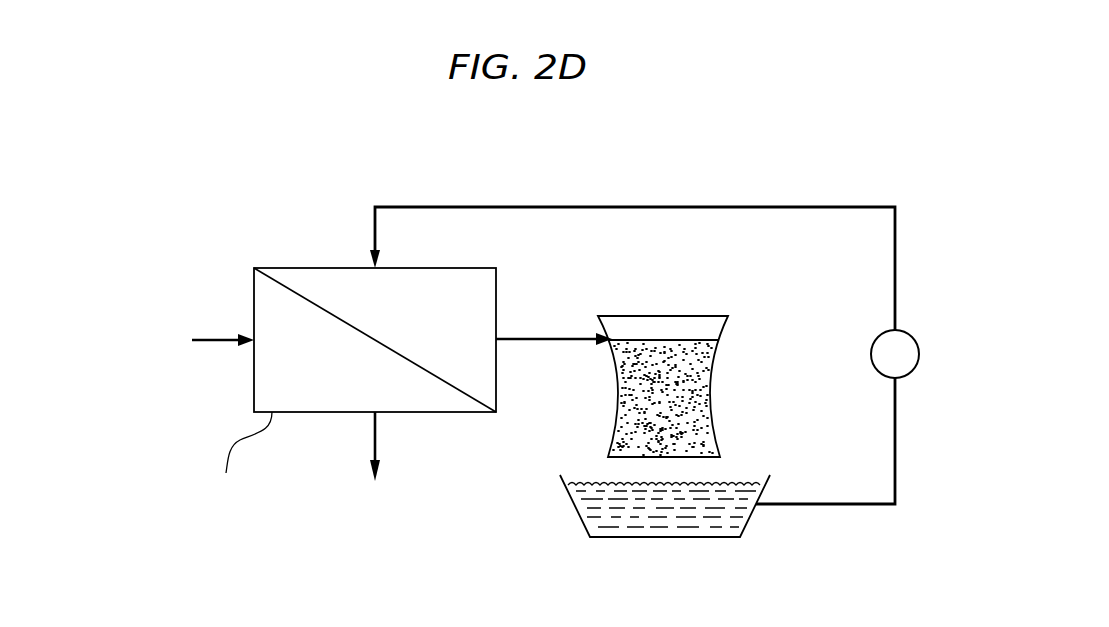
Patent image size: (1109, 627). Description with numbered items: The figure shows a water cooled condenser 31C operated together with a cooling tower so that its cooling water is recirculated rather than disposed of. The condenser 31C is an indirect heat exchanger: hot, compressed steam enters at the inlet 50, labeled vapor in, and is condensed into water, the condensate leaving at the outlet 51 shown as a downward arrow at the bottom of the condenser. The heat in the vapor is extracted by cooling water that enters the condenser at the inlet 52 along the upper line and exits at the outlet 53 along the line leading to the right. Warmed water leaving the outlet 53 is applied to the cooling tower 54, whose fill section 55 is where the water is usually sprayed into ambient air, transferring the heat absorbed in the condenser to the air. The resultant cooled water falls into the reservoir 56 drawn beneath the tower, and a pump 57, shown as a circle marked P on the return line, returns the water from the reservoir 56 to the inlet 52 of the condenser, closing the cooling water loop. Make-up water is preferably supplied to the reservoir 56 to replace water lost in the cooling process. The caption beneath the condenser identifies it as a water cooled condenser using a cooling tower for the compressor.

The water cooled condenser 31C is at (294, 238).
The inlet 50 is at (205, 338).
The outlet 51 is at (378, 428).
The cooling water inlet 52 is at (400, 207).
The cooling water outlet 53 is at (535, 339).
The cooling tower 54 is at (734, 272).
The cooling tower 55 is at (700, 352).
The reservoir 56 is at (765, 492).
The pump 57 is at (912, 335).